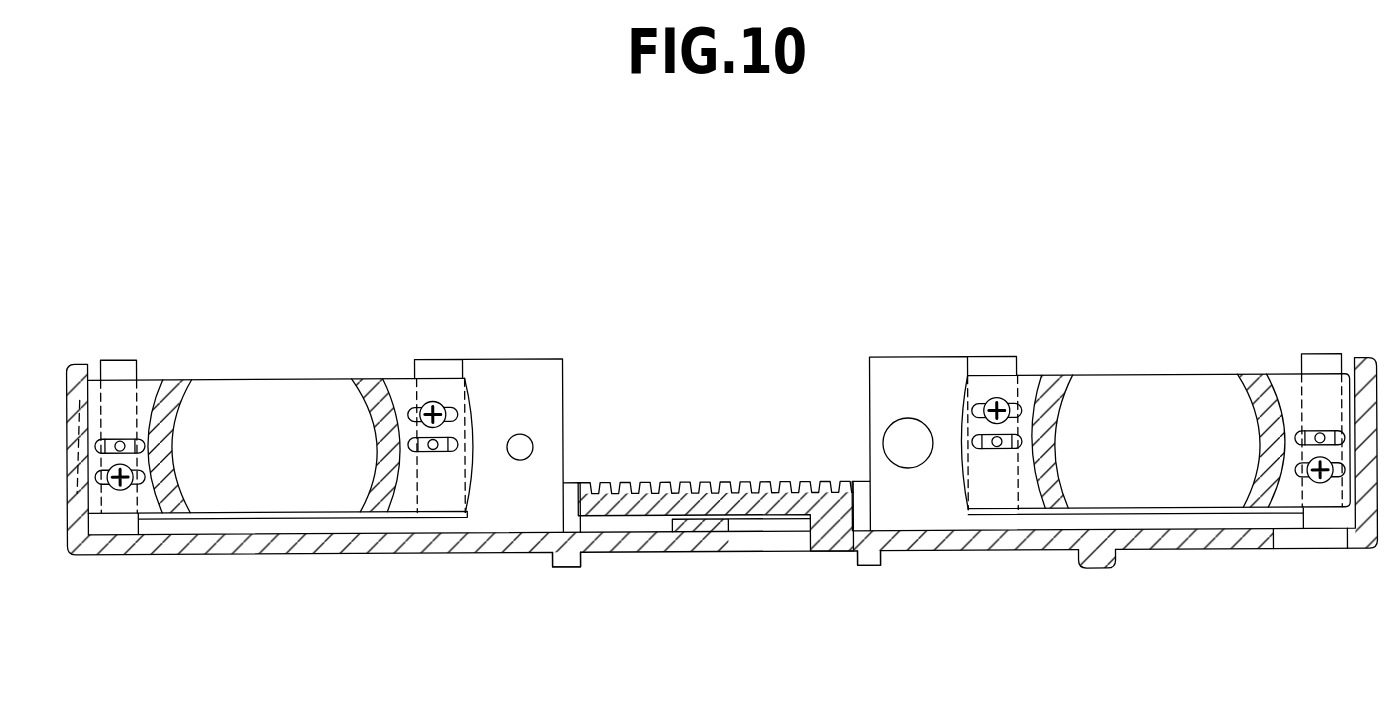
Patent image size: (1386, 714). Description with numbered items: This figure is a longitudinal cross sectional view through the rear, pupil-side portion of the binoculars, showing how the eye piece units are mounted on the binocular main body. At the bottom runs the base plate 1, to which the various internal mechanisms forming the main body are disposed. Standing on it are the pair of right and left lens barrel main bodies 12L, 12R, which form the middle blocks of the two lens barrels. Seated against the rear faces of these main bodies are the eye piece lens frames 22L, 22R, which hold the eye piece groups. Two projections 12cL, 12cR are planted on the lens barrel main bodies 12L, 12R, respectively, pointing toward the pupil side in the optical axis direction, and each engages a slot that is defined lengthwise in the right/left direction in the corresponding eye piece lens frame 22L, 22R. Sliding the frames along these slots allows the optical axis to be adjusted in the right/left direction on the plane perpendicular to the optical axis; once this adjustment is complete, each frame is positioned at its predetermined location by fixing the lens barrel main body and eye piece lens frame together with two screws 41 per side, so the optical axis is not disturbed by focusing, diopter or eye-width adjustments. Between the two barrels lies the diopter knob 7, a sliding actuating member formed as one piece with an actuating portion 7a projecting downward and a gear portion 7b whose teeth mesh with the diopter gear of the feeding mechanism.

The base plate 1 is at (687, 536).
The diopter knob 7 is at (835, 525).
The actuating portion 7a is at (1092, 564).
The gear portion 7b is at (718, 481).
The left lens barrel main body 12L is at (522, 387).
The right lens barrel main body 12R is at (913, 379).
The left projection 12cL is at (430, 440).
The right projection 12cR is at (1320, 434).
The left eye piece lens frame 22L is at (401, 377).
The right eye piece lens frame 22R is at (1062, 485).
The screws 41 is at (436, 399).